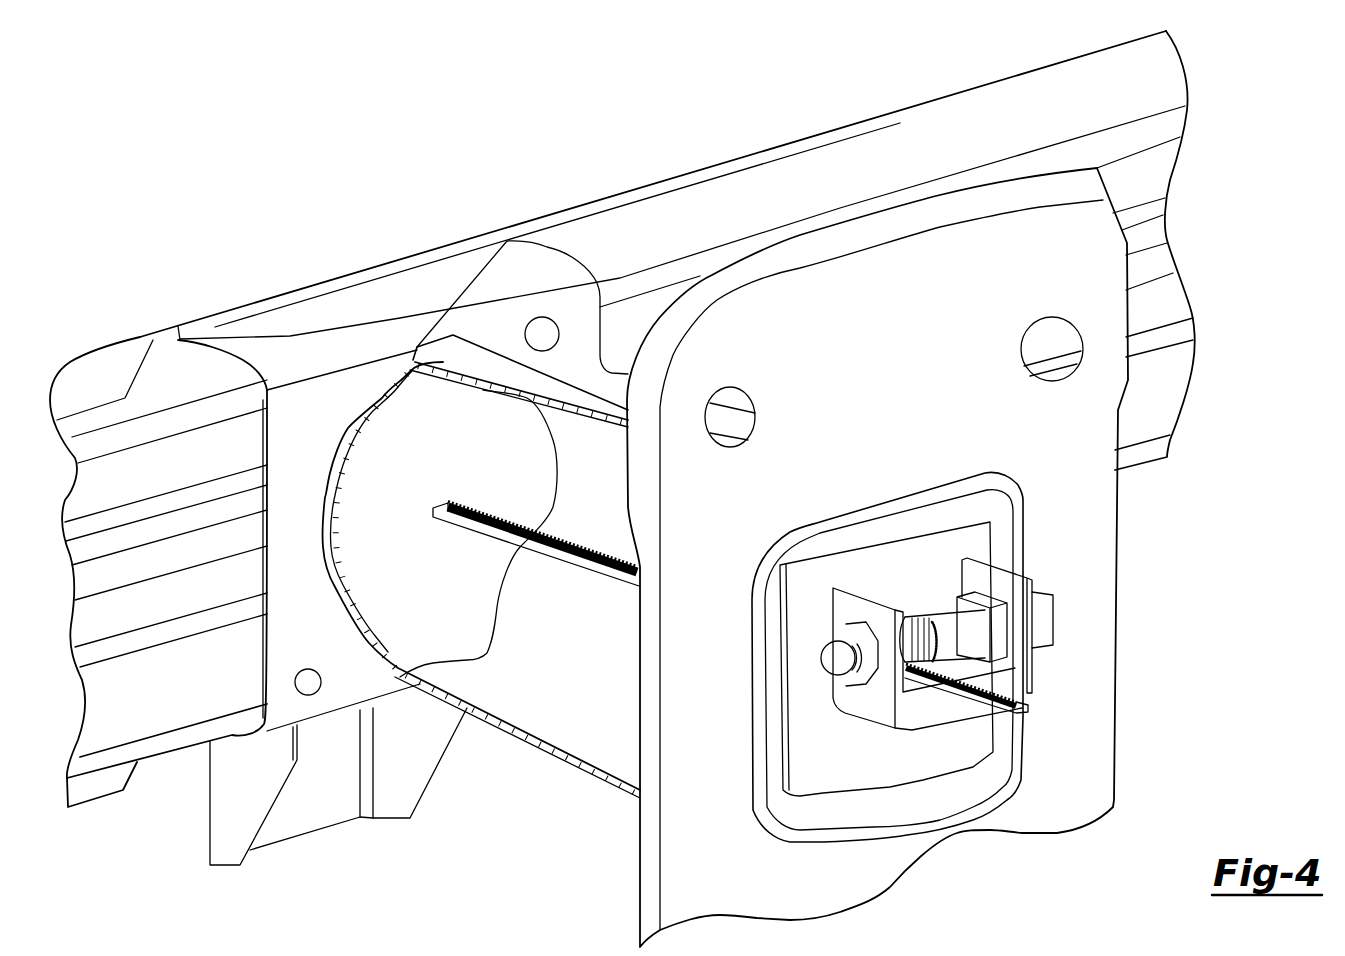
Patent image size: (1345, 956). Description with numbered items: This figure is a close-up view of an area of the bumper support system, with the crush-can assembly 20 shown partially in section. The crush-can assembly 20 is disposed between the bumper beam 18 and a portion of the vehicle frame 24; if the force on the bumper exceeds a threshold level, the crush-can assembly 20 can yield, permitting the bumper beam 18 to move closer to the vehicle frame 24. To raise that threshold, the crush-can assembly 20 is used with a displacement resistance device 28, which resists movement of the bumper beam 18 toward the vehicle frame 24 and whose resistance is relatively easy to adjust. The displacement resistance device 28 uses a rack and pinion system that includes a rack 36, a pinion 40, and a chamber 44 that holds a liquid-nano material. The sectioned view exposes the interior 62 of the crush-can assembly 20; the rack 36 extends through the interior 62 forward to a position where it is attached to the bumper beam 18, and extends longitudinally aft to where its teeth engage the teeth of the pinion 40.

The bumper beam 18 is at (781, 183).
The crush-can assembly 20 is at (480, 357).
The vehicle frame 24 is at (1087, 267).
The displacement resistance device 28 is at (1080, 597).
The rack 36 is at (592, 570).
The pinion 40 is at (957, 635).
The chamber 44 is at (1053, 623).
The interior 62 is at (531, 687).